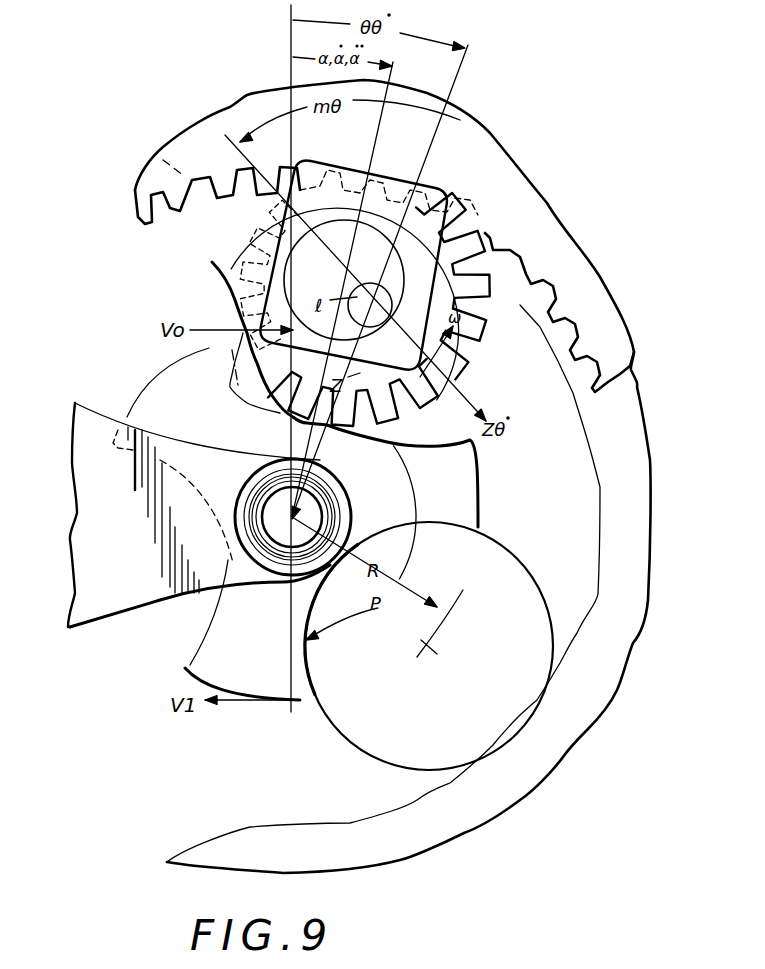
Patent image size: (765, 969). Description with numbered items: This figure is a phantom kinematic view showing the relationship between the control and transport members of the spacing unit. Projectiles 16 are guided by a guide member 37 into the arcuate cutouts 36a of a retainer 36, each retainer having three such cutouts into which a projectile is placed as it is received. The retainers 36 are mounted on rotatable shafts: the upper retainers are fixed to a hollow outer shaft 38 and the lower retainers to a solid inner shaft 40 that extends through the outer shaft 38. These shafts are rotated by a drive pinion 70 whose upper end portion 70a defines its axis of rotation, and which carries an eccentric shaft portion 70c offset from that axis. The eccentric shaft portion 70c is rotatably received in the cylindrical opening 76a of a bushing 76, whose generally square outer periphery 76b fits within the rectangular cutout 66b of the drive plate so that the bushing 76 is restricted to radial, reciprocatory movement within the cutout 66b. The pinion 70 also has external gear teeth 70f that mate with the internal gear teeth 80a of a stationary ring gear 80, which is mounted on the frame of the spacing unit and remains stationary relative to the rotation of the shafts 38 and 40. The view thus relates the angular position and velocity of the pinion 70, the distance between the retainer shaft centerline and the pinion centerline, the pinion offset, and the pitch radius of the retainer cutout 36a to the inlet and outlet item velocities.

The projectile 16 is at (212, 264).
The retainer 36 is at (233, 632).
The arcuate cutout 36a is at (423, 527).
The guide member 37 is at (85, 517).
The hollow outer shaft 38 is at (253, 497).
The solid inner shaft 40 is at (257, 527).
The rectangular cutout 66b is at (397, 368).
The drive pinion 70 is at (348, 190).
The upper end portion 70a is at (363, 285).
The eccentric shaft portion 70c is at (393, 268).
The external gear teeth 70f is at (470, 377).
The bushing 76 is at (357, 362).
The cylindrical opening 76a is at (286, 282).
The outer periphery 76b is at (470, 327).
The ring gear 80 is at (565, 243).
The internal gear teeth 80a is at (485, 233).